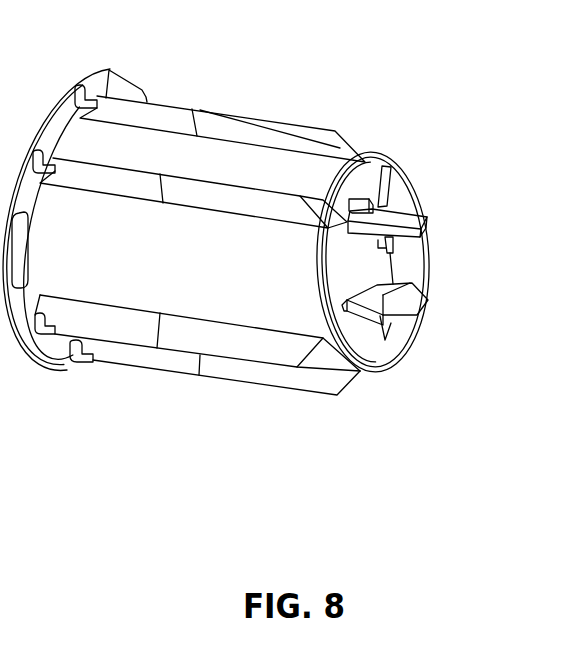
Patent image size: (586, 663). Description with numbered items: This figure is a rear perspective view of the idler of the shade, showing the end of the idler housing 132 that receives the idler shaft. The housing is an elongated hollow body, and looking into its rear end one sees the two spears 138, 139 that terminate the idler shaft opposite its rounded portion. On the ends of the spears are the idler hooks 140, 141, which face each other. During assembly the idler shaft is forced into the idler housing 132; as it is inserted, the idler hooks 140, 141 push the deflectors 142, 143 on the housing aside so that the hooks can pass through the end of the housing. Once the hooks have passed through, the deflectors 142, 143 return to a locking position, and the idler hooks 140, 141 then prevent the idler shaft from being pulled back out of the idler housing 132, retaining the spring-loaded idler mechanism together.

The idler housing 132 is at (188, 150).
The spear 138 is at (403, 221).
The spear 139 is at (380, 318).
The idler hook 140 is at (382, 241).
The idler hook 141 is at (400, 302).
The deflector 142 is at (384, 167).
The deflector 143 is at (356, 318).